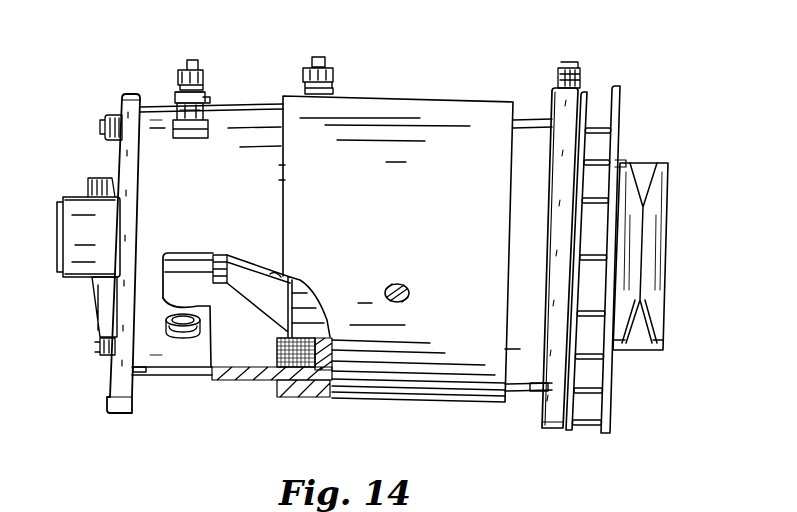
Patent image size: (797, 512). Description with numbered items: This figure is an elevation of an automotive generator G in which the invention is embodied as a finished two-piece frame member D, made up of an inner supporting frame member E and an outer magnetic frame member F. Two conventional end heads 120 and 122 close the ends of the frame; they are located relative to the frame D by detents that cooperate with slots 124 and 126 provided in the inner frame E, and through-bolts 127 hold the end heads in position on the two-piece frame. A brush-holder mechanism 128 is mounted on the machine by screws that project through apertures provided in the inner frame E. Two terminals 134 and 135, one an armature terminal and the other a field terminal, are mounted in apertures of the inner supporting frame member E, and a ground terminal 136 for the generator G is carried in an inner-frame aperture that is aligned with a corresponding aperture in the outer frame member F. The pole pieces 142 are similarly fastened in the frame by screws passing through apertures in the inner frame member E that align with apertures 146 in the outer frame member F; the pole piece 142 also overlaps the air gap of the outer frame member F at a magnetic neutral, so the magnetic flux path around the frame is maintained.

The end head 120 is at (131, 93).
The end head 122 is at (582, 102).
The slot 124 is at (140, 374).
The slot 126 is at (537, 391).
The through-bolt 127 is at (106, 120).
The brush-holder mechanism 128 is at (219, 368).
The terminal 134 is at (187, 62).
The terminal 135 is at (203, 90).
The ground terminal 136 is at (325, 63).
The pole piece 142 is at (318, 390).
The aperture 146 is at (396, 285).
The frame member D is at (474, 102).
The inner supporting frame member E is at (258, 120).
The outer magnetic frame member F is at (413, 110).
The generator G is at (626, 145).